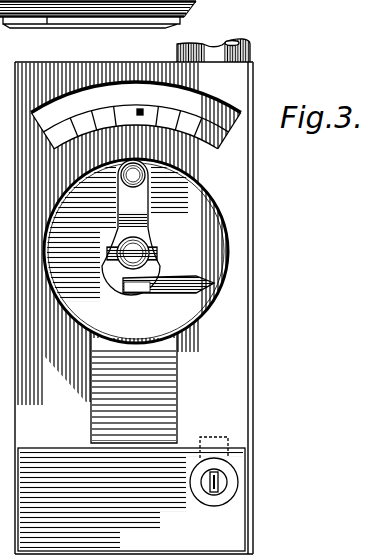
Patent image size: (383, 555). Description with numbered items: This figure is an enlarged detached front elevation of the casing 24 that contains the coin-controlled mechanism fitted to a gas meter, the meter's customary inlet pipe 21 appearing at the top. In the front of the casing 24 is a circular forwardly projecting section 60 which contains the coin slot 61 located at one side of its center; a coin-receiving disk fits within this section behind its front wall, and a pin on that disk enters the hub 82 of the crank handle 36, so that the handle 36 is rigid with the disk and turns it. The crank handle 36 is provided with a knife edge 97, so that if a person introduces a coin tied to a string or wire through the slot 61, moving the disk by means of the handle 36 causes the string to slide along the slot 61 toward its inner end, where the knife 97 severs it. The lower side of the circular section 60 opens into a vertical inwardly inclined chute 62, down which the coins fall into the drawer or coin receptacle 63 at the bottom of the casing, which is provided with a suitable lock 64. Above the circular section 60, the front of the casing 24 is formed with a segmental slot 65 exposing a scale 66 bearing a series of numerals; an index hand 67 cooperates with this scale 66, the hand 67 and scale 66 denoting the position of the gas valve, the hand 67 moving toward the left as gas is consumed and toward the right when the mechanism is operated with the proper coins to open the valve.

The inlet pipe 21 is at (238, 43).
The casing 24 is at (148, 308).
The crank handle 36 is at (133, 186).
The circular forwardly projecting section 60 is at (136, 251).
The coin slot 61 is at (214, 283).
The chute 62 is at (176, 383).
The coin receptacle 63 is at (131, 499).
The lock 64 is at (240, 482).
The segmental slot 65 is at (210, 109).
The scale 66 is at (218, 106).
The index hand 67 is at (141, 109).
The hub 82 is at (149, 244).
The knife edge 97 is at (153, 287).